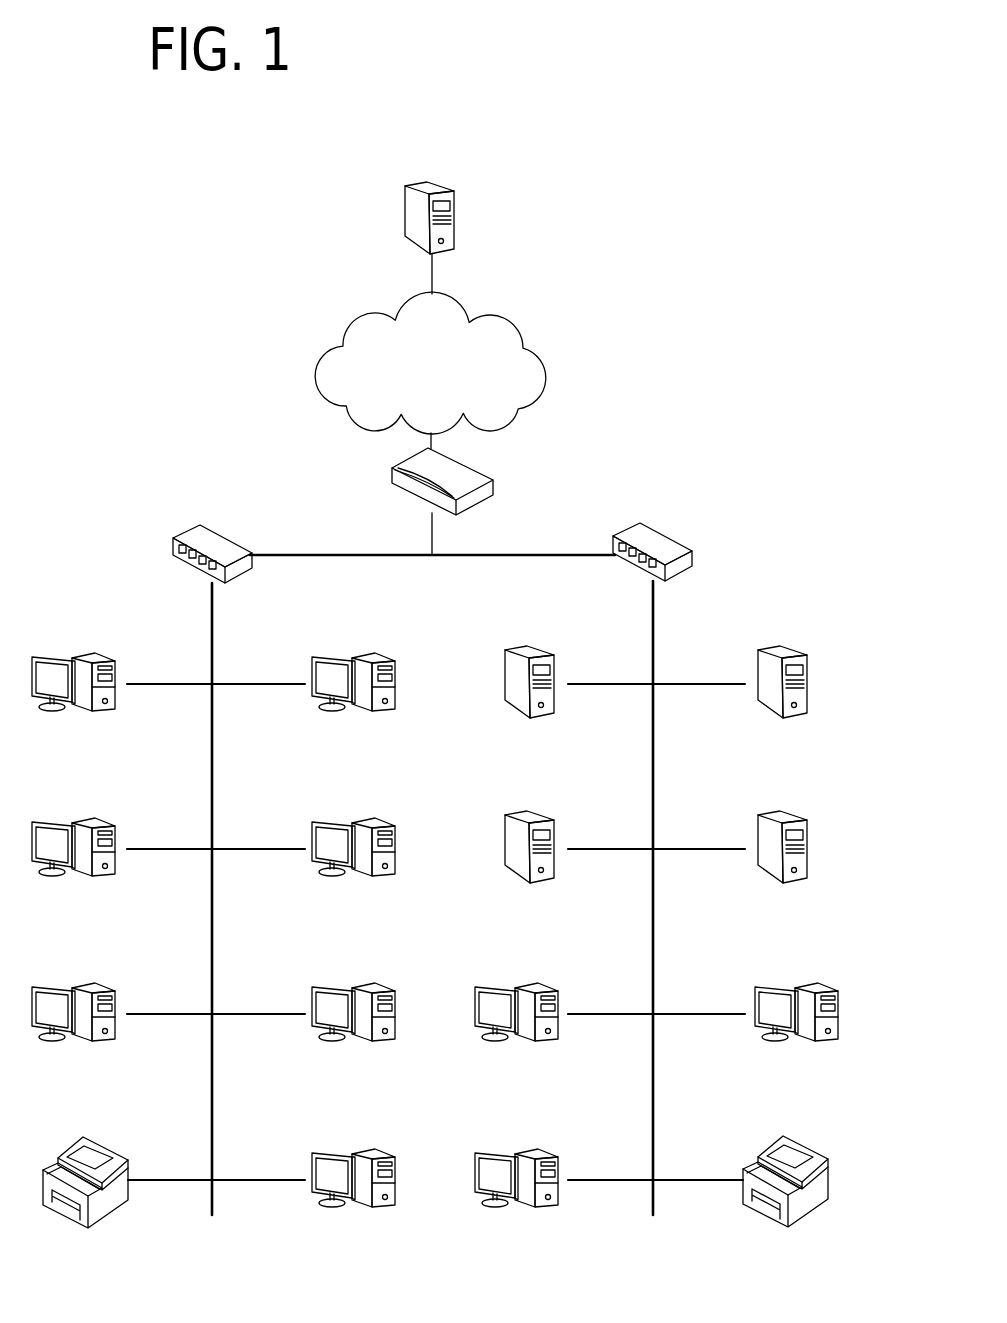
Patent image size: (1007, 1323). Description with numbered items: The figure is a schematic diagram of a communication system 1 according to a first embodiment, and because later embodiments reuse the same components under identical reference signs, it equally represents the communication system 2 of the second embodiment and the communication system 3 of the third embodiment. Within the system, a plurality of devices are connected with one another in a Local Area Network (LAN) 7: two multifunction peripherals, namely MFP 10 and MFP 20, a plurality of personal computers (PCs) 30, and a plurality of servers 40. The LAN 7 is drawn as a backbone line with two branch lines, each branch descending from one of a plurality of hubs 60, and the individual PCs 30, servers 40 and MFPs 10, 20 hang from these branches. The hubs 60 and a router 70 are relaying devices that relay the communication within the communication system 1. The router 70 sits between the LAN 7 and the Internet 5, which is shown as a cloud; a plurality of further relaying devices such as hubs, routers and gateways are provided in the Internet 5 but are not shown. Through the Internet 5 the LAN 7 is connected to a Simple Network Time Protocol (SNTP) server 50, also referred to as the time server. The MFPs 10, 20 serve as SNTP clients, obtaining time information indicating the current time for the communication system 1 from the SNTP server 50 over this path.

The communication system 1 is at (718, 160).
The communication system 2 is at (444, 678).
The communication system 3 is at (444, 678).
The Internet 5 is at (515, 323).
The Local Area Network (LAN) 7 is at (355, 528).
The MFP 10 is at (74, 1145).
The MFP 20 is at (775, 1144).
The Personal Computer (PC) 30 is at (82, 657).
The server 40 is at (517, 650).
The SNTP server 50 is at (459, 158).
The hub 60 is at (218, 546).
The router 70 is at (493, 478).